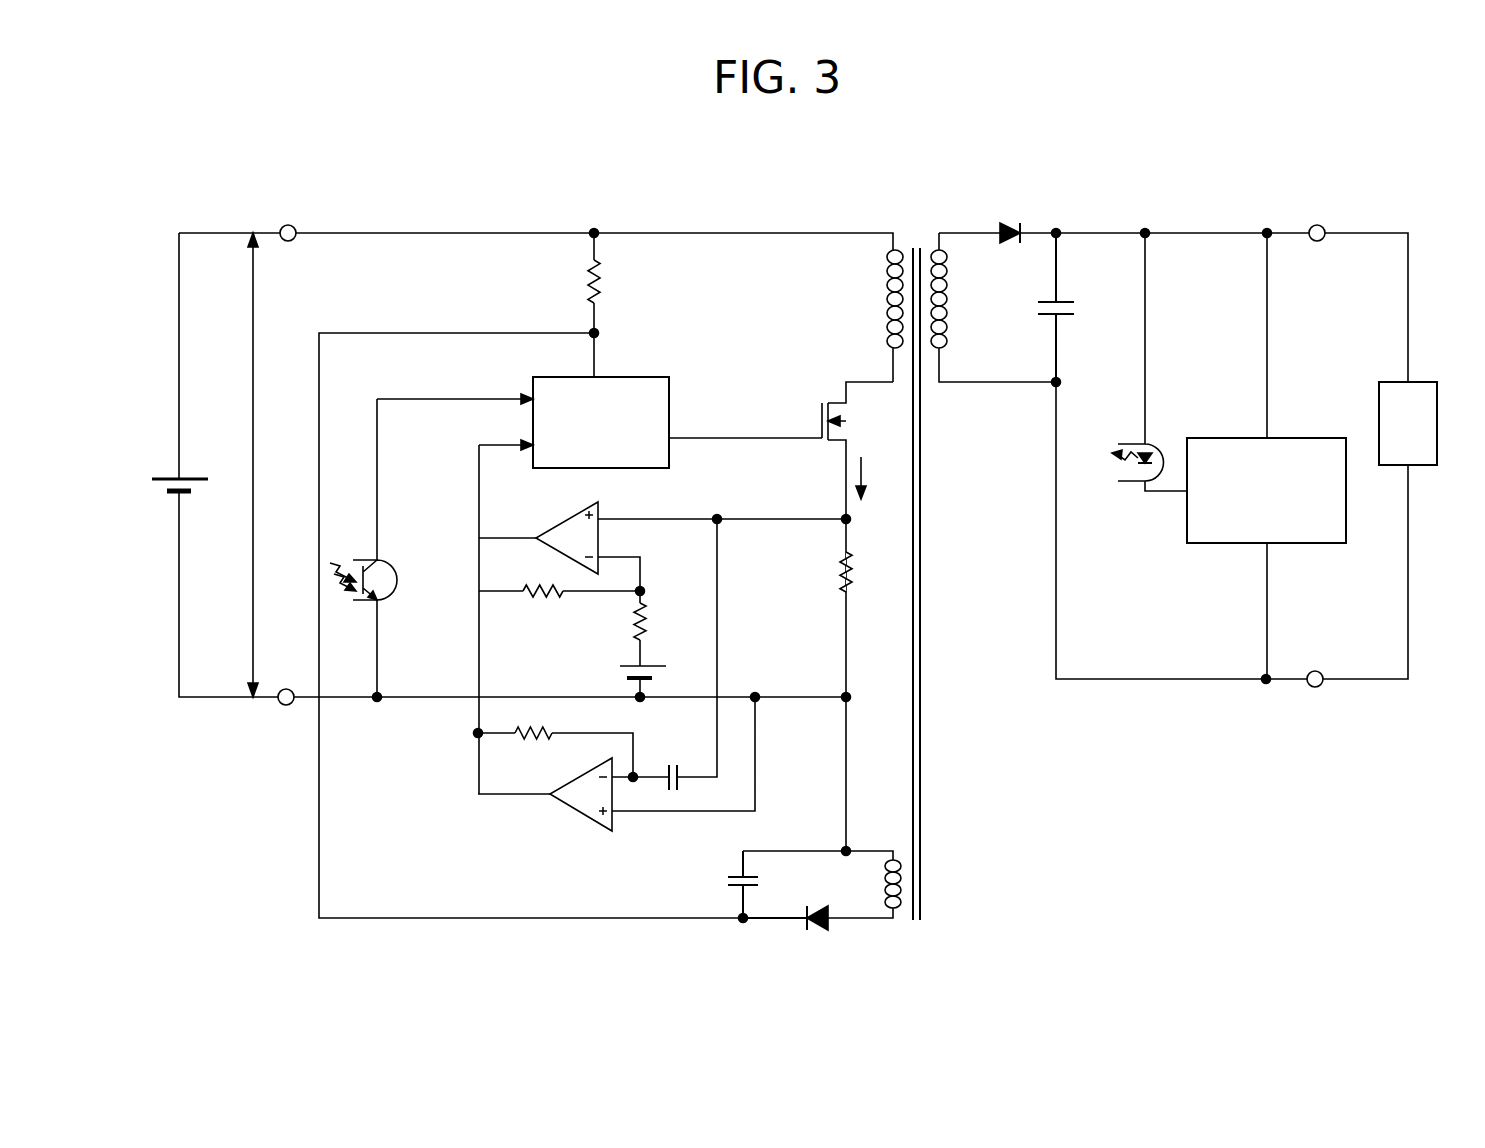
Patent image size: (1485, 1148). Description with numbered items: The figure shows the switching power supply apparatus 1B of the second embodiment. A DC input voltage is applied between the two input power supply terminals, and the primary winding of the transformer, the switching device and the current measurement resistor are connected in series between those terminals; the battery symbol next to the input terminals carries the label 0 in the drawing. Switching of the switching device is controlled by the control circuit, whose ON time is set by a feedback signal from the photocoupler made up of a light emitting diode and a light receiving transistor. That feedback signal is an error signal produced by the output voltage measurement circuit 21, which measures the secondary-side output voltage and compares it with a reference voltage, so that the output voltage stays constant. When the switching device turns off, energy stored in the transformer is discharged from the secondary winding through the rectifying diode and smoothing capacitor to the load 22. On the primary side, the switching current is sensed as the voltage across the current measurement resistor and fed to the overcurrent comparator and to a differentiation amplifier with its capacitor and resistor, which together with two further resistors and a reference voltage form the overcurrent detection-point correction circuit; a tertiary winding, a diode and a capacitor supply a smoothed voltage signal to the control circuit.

The DC power source 0 is at (165, 481).
The switching power supply apparatus 1B is at (852, 180).
The output voltage measurement circuit 21 is at (1292, 438).
The load 22 is at (1425, 382).